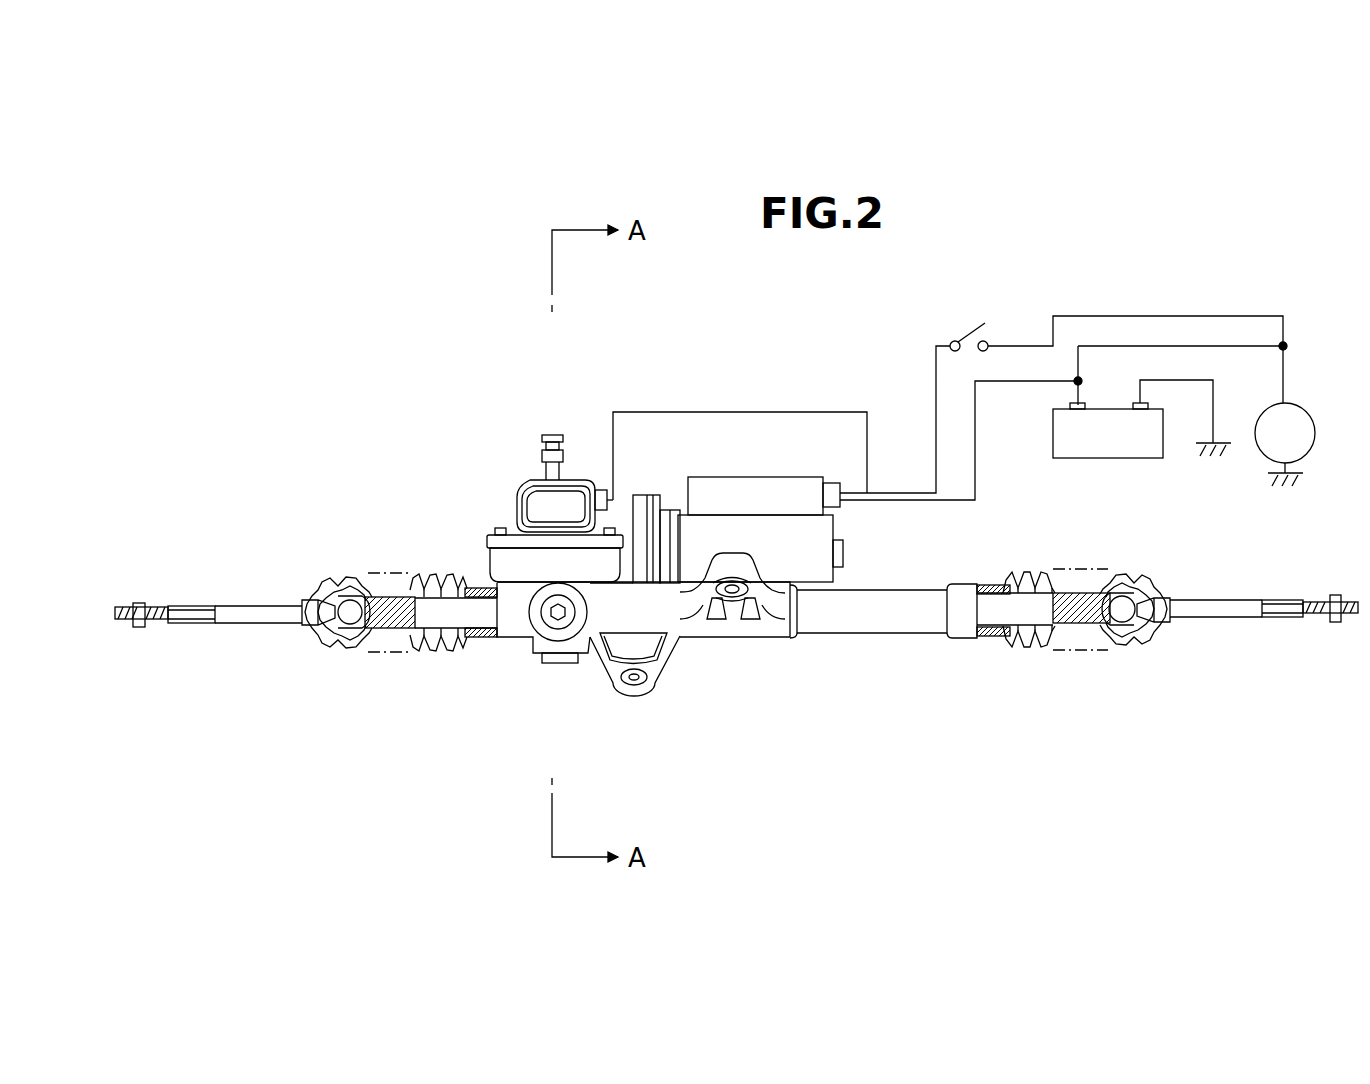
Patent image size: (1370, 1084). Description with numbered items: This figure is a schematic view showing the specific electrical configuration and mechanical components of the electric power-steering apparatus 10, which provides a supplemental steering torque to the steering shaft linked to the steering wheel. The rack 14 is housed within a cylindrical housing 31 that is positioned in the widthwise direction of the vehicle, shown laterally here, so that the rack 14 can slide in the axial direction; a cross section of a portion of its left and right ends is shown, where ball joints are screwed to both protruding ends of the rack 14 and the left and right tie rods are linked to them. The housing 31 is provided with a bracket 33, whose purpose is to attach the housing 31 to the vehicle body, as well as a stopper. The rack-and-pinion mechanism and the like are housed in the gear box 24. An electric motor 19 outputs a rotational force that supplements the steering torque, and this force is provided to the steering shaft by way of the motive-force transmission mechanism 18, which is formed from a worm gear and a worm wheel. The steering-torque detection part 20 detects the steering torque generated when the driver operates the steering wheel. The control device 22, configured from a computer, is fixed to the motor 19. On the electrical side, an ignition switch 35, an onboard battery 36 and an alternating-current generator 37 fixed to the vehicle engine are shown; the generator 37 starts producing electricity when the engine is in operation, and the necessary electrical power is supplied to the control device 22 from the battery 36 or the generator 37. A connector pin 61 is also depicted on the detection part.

The electric power-steering apparatus 10 is at (510, 420).
The rack 14 is at (993, 612).
The motive-force transmission mechanism 18 is at (497, 565).
The electric motor 19 is at (817, 582).
The steering-torque detection part 20 is at (540, 515).
The control device 22 is at (738, 488).
The gear box 24 is at (593, 659).
The housing 31 is at (765, 633).
The bracket 33 is at (732, 598).
The ignition switch 35 is at (973, 325).
The onboard battery 36 is at (1123, 460).
The alternating-current generator 37 is at (1312, 413).
The connector pin 61 is at (522, 482).